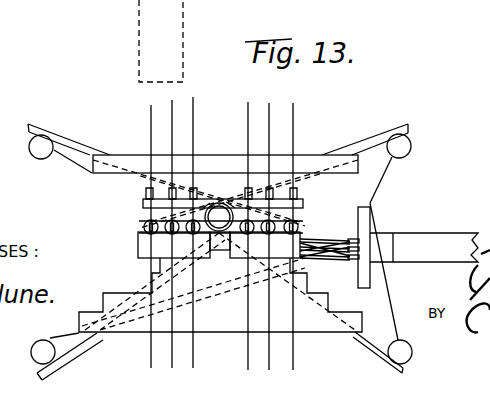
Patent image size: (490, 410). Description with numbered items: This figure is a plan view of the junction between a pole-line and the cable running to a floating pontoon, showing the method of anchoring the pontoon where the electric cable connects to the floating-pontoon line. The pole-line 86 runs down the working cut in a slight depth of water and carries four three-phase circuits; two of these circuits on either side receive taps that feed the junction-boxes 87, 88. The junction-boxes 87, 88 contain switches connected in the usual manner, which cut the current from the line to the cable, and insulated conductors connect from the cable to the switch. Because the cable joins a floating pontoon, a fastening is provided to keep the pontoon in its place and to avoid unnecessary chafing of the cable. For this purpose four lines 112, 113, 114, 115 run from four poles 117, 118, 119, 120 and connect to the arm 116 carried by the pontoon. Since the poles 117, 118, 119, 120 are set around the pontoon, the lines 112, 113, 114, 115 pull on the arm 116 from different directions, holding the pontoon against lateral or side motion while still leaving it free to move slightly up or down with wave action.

The pole-line 86 is at (143, 205).
The junction-box 87 is at (278, 242).
The junction-box 88 is at (140, 240).
The line 112 is at (378, 197).
The line 113 is at (391, 315).
The line 114 is at (54, 340).
The line 115 is at (62, 149).
The arm 116 is at (424, 247).
The pole 117 is at (30, 149).
The pole 118 is at (411, 146).
The pole 119 is at (32, 352).
The pole 120 is at (398, 355).